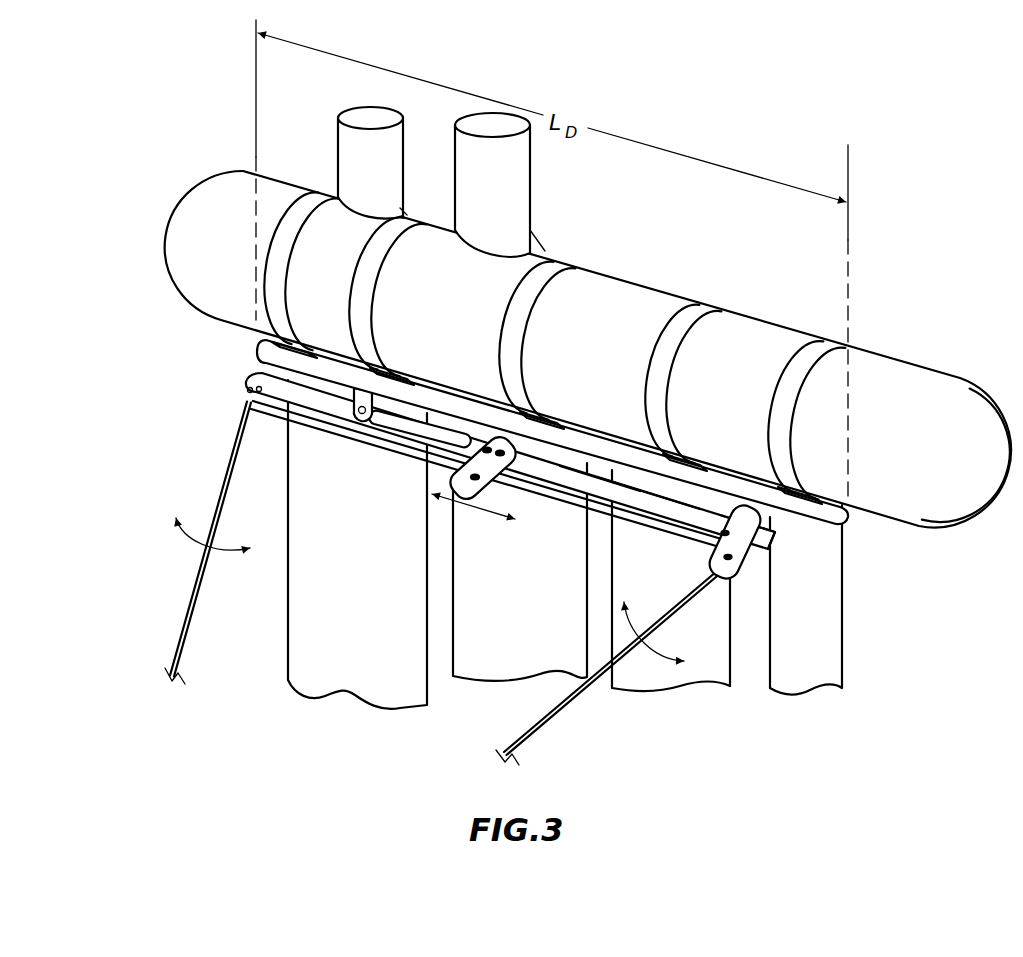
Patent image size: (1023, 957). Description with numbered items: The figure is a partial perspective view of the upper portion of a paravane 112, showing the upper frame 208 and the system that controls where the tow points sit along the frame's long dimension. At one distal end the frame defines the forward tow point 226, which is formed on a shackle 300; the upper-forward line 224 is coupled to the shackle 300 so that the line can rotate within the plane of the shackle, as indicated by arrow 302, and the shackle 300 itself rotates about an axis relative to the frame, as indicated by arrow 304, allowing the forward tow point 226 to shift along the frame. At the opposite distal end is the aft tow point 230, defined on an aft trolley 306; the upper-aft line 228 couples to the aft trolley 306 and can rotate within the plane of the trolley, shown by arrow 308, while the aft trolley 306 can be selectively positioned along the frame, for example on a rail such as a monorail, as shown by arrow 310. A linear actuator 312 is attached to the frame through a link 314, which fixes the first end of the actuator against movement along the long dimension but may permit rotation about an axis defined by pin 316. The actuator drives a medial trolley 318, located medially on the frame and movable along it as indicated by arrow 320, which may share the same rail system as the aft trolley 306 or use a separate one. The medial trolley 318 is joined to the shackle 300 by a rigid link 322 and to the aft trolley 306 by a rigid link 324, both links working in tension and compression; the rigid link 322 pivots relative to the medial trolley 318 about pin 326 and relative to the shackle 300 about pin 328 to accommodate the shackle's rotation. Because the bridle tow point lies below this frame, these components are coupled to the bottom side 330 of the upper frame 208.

The paravane 112 is at (806, 128).
The upper frame 208 is at (812, 490).
The upper-forward line 224 is at (585, 702).
The forward tow point 226 is at (760, 563).
The upper-aft line 228 is at (198, 590).
The aft tow point 230 is at (233, 405).
The shackle 300 is at (773, 535).
The arrow 302 is at (620, 635).
The arrow 304 is at (718, 580).
The aft trolley 306 is at (232, 370).
The arrow 308 is at (190, 537).
The arrow 310 is at (245, 343).
The linear actuator 312 is at (408, 420).
The link 314 is at (362, 404).
The pin 316 is at (207, 390).
The medial trolley 318 is at (488, 470).
The arrow 320 is at (480, 512).
The rigid link 322 is at (600, 520).
The rigid link 324 is at (347, 442).
The pin 326 is at (560, 421).
The pin 328 is at (717, 528).
The bottom side 330 is at (676, 495).